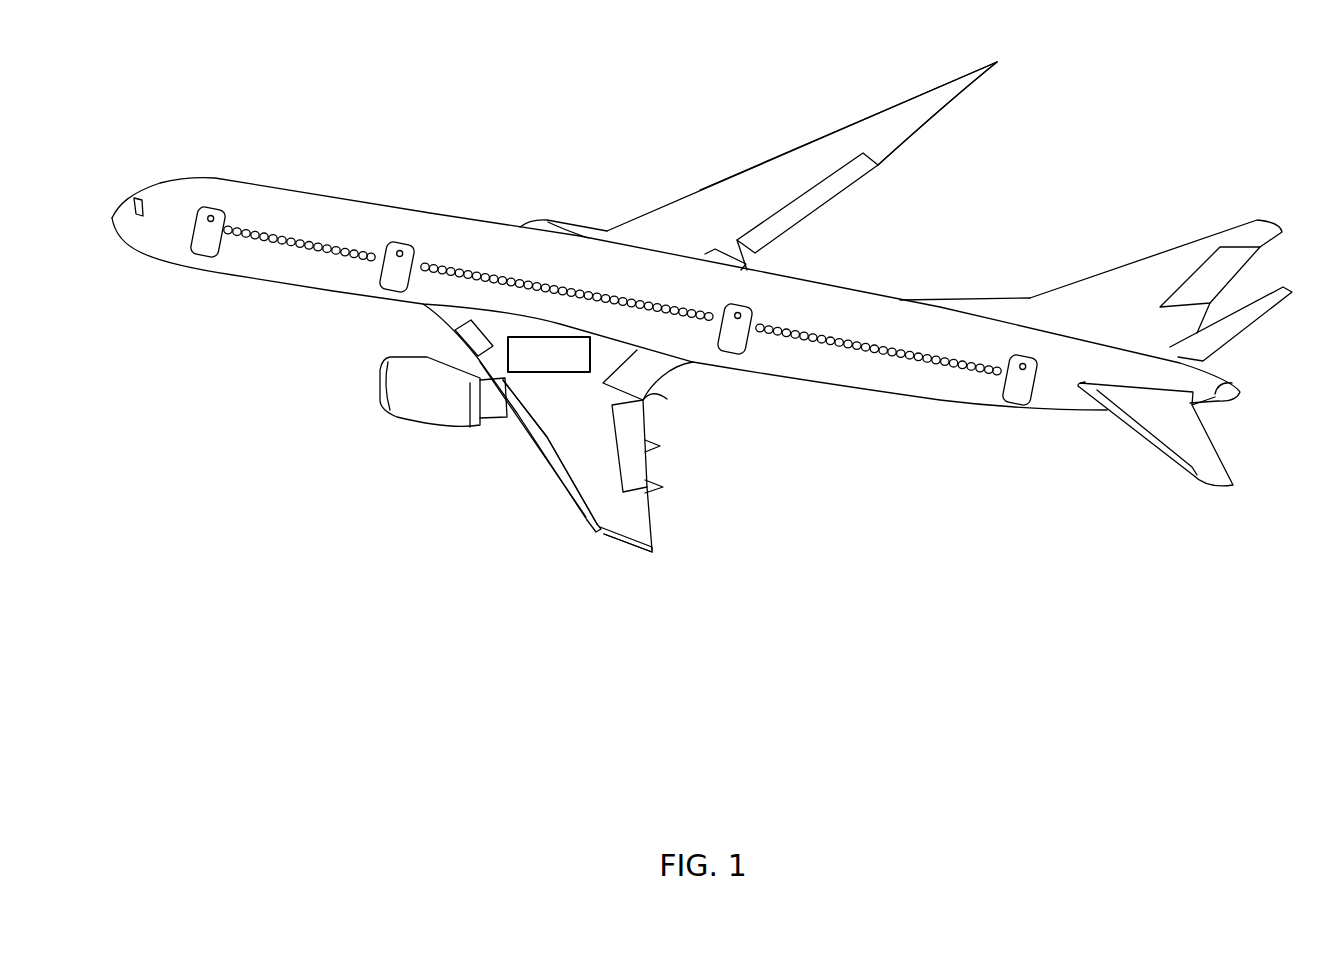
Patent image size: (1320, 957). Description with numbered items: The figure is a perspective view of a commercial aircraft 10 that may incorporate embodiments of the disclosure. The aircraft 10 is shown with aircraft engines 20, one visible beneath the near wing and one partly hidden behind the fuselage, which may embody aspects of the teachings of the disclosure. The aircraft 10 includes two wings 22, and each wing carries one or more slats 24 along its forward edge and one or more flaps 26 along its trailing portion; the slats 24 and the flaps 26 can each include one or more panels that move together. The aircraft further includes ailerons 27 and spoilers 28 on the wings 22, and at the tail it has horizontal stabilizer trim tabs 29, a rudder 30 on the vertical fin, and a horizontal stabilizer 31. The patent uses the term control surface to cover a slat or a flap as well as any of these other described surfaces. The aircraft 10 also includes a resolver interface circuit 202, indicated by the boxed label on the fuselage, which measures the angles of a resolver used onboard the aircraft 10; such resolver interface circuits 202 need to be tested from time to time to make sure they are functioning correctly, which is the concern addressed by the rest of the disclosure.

The commercial aircraft 10 is at (1138, 65).
The aircraft engines 20 is at (380, 397).
The wings 22 is at (803, 158).
The slats 24 is at (553, 480).
The flaps 26 is at (830, 192).
The ailerons 27 is at (928, 123).
The spoilers 28 is at (886, 109).
The horizontal stabilizer trim tabs 29 is at (1117, 433).
The rudder 30 is at (1209, 264).
The horizontal stabilizer 31 is at (1199, 436).
The resolver interface circuit 202 is at (549, 354).